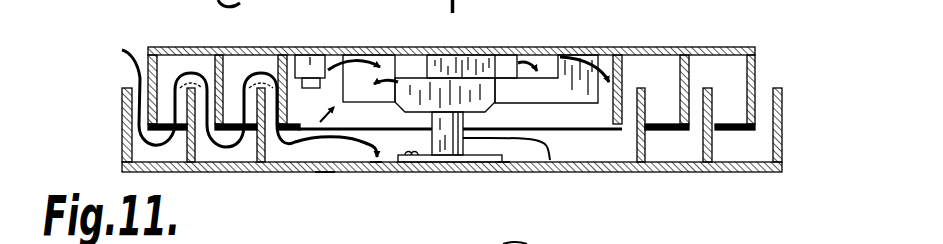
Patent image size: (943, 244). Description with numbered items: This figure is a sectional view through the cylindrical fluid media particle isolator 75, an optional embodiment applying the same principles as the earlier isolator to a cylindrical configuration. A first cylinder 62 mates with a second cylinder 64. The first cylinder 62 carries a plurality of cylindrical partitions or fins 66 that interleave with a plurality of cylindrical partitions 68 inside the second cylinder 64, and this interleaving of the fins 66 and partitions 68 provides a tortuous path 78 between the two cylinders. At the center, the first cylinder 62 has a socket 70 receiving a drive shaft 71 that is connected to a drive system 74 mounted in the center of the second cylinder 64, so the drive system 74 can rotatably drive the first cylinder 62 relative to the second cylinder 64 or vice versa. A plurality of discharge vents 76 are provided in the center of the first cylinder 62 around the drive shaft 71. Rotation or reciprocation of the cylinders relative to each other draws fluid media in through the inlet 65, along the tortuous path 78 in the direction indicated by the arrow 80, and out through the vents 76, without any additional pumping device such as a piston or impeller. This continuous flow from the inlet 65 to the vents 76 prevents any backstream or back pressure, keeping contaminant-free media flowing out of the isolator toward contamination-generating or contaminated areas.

The first cylinder 62 is at (785, 150).
The second cylinder 64 is at (758, 51).
The inlet 65 is at (762, 97).
The cylindrical partitions or fins 66 is at (645, 143).
The cylindrical partitions 68 is at (676, 76).
The socket 70 is at (565, 173).
The drive shaft 71 is at (460, 167).
The drive system 74 is at (433, 57).
The cylindrical fluid media particle isolator 75 is at (325, 175).
The discharge vents 76 is at (375, 173).
The tortuous path 78 is at (137, 145).
The arrow 80 is at (128, 57).